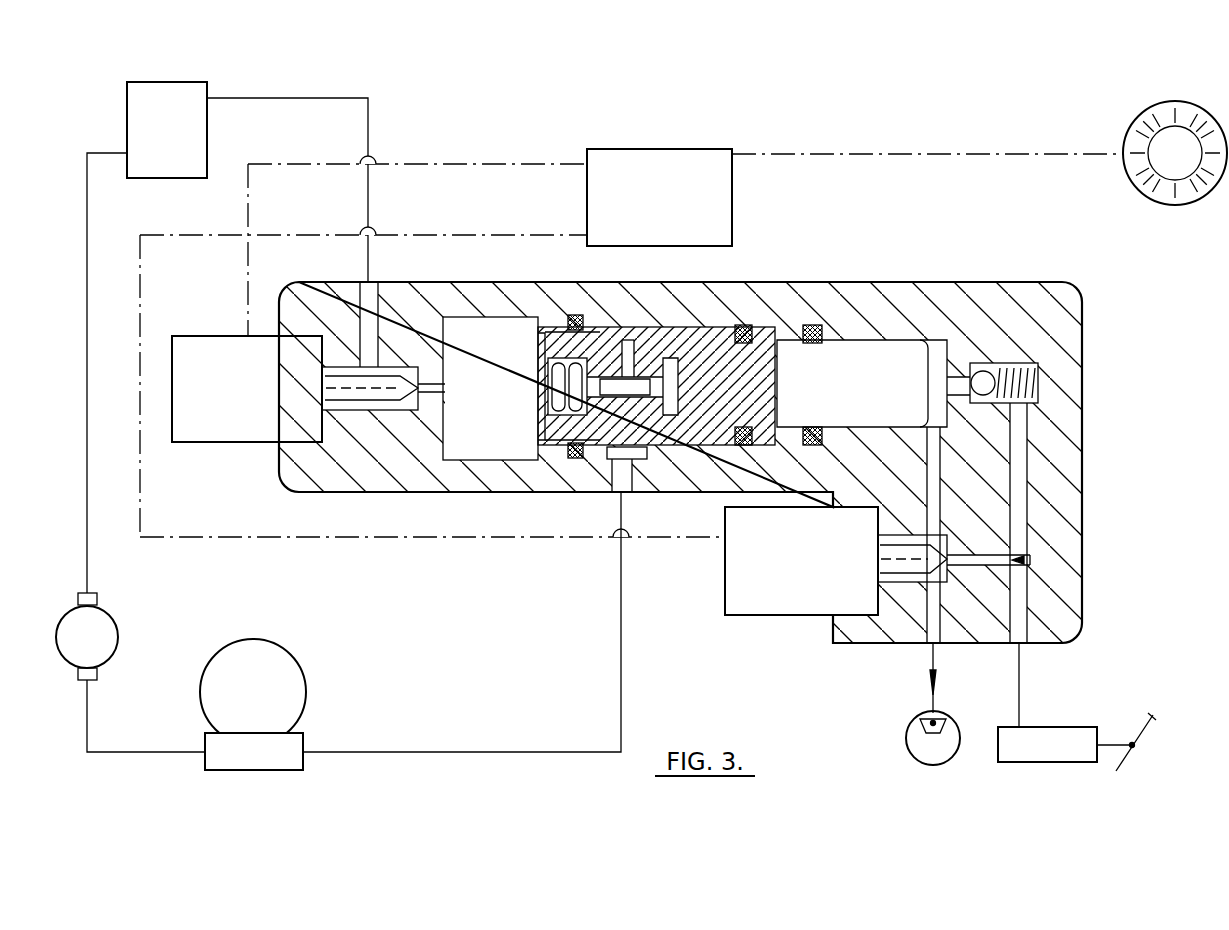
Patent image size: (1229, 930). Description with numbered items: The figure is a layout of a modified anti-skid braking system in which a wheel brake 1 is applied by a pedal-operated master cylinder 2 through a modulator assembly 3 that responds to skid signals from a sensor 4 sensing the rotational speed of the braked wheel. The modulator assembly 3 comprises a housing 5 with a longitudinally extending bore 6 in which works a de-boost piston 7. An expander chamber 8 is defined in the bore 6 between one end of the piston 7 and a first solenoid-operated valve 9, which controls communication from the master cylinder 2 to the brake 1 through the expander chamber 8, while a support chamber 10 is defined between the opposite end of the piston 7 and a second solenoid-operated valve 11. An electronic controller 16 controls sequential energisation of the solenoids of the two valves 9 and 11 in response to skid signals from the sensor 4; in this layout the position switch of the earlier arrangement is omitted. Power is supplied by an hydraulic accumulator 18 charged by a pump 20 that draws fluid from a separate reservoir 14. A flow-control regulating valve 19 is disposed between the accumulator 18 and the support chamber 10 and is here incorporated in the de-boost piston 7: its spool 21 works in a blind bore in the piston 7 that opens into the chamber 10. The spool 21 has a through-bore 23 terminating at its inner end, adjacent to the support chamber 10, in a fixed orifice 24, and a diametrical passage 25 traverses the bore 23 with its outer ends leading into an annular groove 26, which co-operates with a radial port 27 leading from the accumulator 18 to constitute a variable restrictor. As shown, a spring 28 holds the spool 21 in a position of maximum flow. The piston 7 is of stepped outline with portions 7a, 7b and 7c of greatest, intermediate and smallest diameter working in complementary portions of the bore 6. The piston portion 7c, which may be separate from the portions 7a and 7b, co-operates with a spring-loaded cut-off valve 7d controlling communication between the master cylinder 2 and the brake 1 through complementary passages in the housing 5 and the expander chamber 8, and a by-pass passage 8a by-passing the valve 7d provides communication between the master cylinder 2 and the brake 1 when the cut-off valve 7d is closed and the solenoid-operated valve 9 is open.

The wheel brake 1 is at (920, 744).
The master cylinder 2 is at (1030, 745).
The modulator assembly 3 is at (911, 300).
The sensor 4 is at (1168, 195).
The housing 5 is at (1060, 487).
The bore 6 is at (797, 340).
The de-boost piston 7 is at (737, 340).
The piston portion of greatest diameter 7a is at (556, 340).
The piston portion of intermediate diameter 7b is at (713, 360).
The piston portion of smallest diameter 7c is at (860, 360).
The spring-loaded cut-off valve 7d is at (1000, 370).
The expander chamber 8 is at (950, 345).
The by-pass passage 8a is at (1030, 560).
The first solenoid-operated valve 9 is at (785, 597).
The support chamber 10 is at (510, 325).
The second solenoid-operated valve 11 is at (220, 443).
The reservoir 14 is at (150, 104).
The electronic controller 16 is at (612, 165).
The hydraulic accumulator 18 is at (255, 668).
The flow-control regulating valve 19 is at (606, 340).
The pump 20 is at (100, 638).
The spool 21 is at (601, 340).
The through-bore 23 is at (592, 415).
The fixed orifice 24 is at (590, 382).
The diametrical passage 25 is at (628, 340).
The annular groove 26 is at (655, 448).
The radial port 27 is at (618, 486).
The spring 28 is at (560, 362).